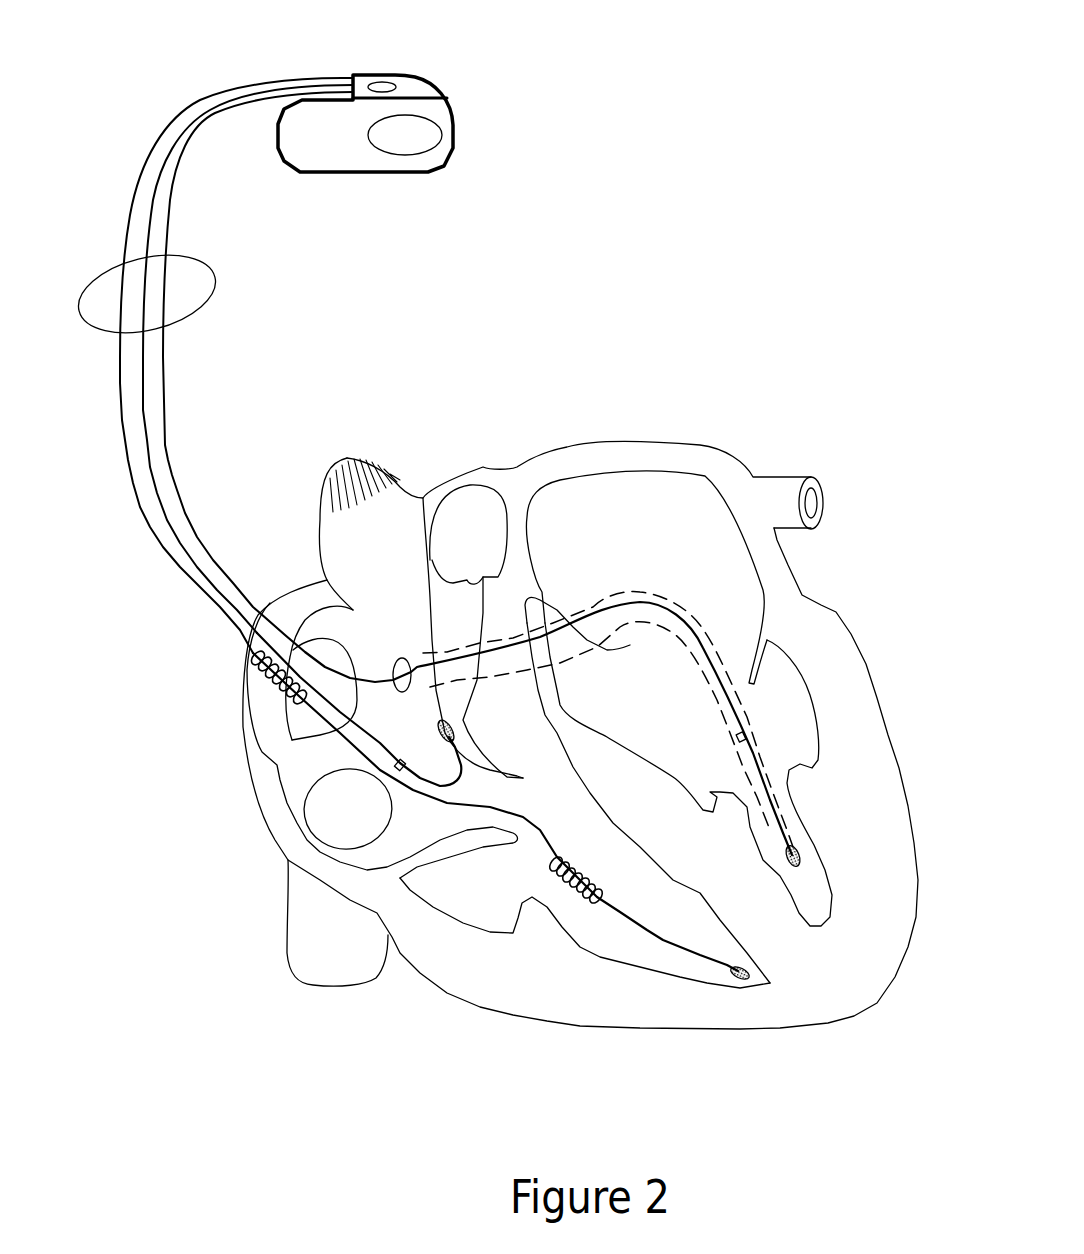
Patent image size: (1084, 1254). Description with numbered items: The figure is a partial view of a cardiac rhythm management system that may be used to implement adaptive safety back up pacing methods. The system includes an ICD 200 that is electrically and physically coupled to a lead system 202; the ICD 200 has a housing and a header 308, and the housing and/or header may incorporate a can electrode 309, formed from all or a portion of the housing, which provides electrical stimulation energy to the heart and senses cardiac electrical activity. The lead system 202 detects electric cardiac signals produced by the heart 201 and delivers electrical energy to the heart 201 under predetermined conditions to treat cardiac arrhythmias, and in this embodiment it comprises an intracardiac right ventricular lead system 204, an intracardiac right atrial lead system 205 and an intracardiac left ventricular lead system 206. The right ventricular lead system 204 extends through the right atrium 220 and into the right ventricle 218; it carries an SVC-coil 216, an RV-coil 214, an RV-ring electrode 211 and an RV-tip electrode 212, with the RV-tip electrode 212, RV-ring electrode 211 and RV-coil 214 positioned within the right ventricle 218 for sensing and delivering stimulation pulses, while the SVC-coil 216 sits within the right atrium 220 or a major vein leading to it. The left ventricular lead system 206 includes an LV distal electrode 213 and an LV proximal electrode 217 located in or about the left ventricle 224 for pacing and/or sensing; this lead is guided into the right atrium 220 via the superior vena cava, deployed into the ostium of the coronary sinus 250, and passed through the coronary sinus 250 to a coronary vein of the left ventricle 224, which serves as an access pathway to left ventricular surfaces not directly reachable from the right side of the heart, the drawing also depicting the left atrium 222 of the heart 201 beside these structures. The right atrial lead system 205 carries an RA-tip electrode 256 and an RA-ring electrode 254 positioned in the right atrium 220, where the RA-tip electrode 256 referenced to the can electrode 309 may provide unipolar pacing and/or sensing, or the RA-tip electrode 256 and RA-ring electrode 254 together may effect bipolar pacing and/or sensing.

The ICD 200 is at (393, 75).
The connector header 308 is at (378, 80).
The can electrode 309 is at (412, 138).
The heart 201 is at (572, 447).
The lead system 202 is at (218, 272).
The right ventricular lead system 204 is at (120, 383).
The right atrial lead system 205 is at (145, 416).
The left ventricular lead system 206 is at (167, 460).
The RV-ring electrode 211 is at (663, 935).
The RV-tip electrode 212 is at (730, 962).
The LV distal electrode 213 is at (795, 858).
The RV-coil 214 is at (548, 871).
The SVC-coil 216 is at (252, 689).
The LV proximal electrode 217 is at (770, 722).
The right ventricle 218 is at (585, 805).
The right atrium 220 is at (382, 740).
The left atrium 222 is at (646, 577).
The left ventricle 224 is at (678, 761).
The coronary sinus 250 is at (412, 657).
The RA-ring electrode 254 is at (422, 748).
The RA-tip electrode 256 is at (440, 722).